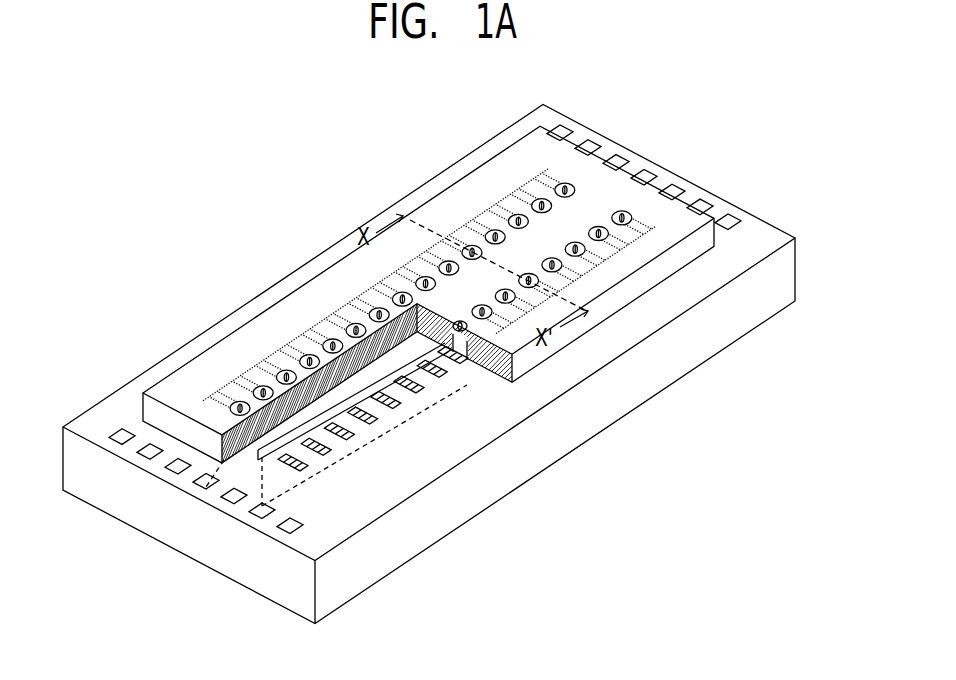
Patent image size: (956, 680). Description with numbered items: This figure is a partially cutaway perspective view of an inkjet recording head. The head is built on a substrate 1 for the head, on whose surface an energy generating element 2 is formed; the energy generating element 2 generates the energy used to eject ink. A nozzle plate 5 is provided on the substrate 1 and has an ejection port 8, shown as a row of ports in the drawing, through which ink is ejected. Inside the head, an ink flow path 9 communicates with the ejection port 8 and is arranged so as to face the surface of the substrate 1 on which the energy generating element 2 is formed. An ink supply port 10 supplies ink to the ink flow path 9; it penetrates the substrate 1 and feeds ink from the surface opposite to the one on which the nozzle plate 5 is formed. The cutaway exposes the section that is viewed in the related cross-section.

The substrate 1 is at (737, 248).
The energy generating element 2 is at (375, 418).
The nozzle plate 5 is at (657, 211).
The ejection port 8 is at (440, 256).
The ink flow path 9 is at (467, 360).
The ink supply port 10 is at (268, 444).